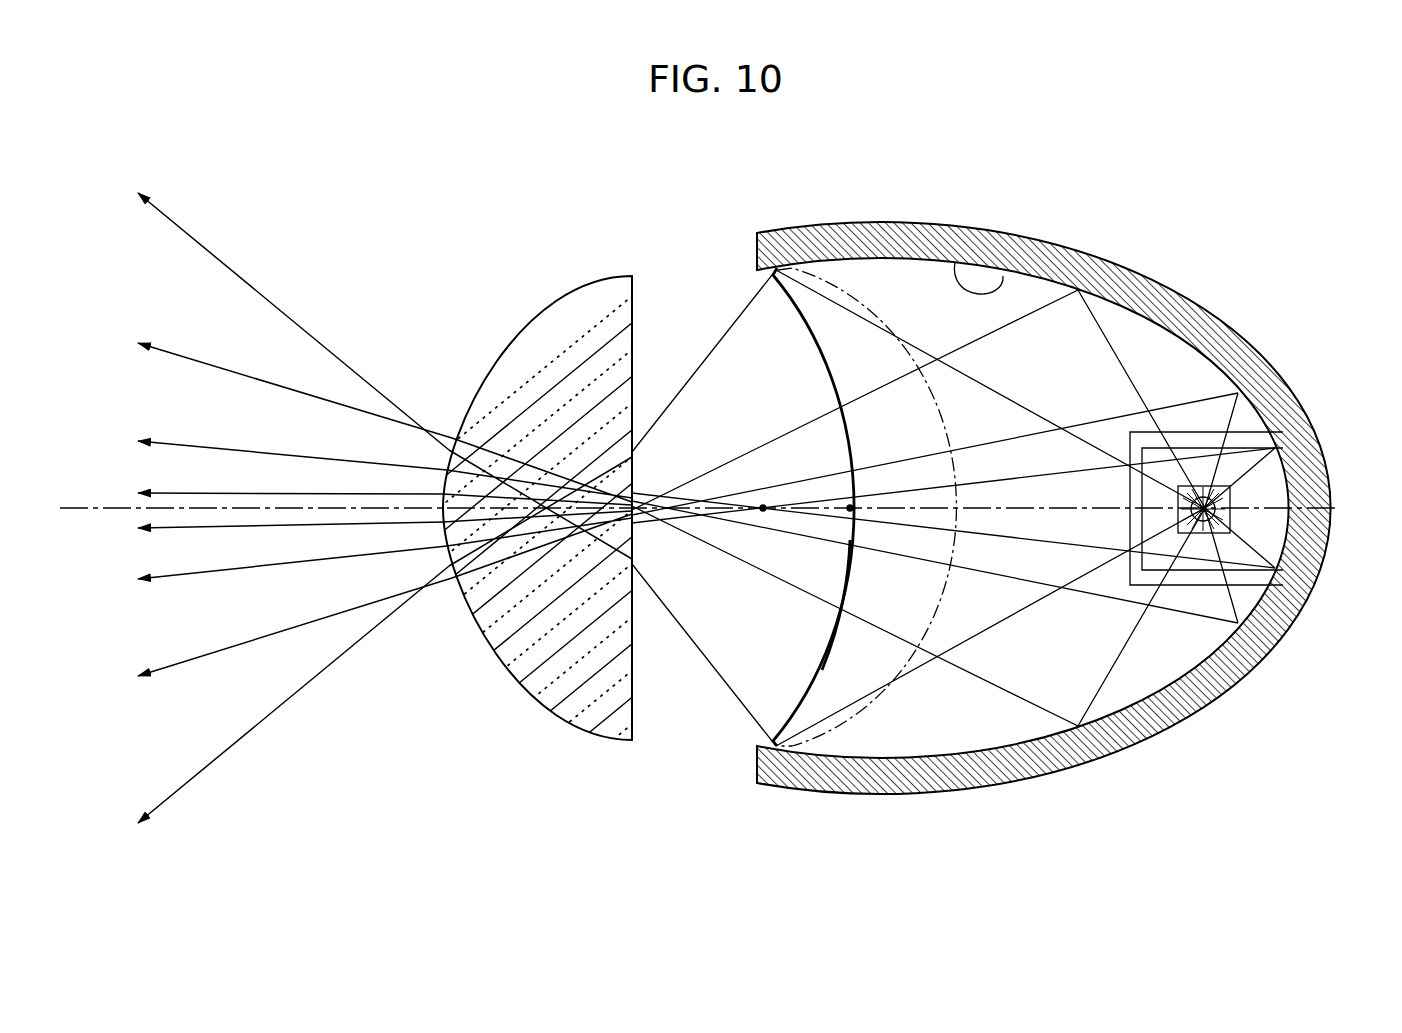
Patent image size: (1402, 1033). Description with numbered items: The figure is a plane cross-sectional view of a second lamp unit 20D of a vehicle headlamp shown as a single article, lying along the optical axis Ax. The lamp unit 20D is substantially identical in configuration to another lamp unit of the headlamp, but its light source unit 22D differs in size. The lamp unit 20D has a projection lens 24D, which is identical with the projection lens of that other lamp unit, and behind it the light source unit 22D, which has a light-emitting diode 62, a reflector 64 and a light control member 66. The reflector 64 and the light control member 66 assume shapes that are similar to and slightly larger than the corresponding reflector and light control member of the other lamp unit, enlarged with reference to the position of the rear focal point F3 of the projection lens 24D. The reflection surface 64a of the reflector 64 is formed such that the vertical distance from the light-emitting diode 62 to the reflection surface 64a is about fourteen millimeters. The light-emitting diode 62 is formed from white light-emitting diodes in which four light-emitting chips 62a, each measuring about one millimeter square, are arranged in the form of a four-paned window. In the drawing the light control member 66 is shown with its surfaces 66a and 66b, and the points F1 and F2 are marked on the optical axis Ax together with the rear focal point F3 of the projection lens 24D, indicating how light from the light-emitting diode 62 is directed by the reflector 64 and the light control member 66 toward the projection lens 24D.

The lamp unit 20D is at (1118, 180).
The light source unit 22D is at (741, 222).
The projection lens 24D is at (540, 303).
The light-emitting diode 62 is at (1236, 517).
The light-emitting chip 62a is at (1232, 486).
The reflector 64 is at (1153, 272).
The reflection surface 64a is at (955, 262).
The light control member 66 is at (800, 330).
The lens entrance surface 66a is at (870, 571).
The lens exit surface 66b is at (815, 650).
The optical axis Ax is at (135, 507).
The first focal point F1 is at (1205, 526).
The second focal point F2 is at (763, 504).
The rear focal point F3 is at (851, 504).